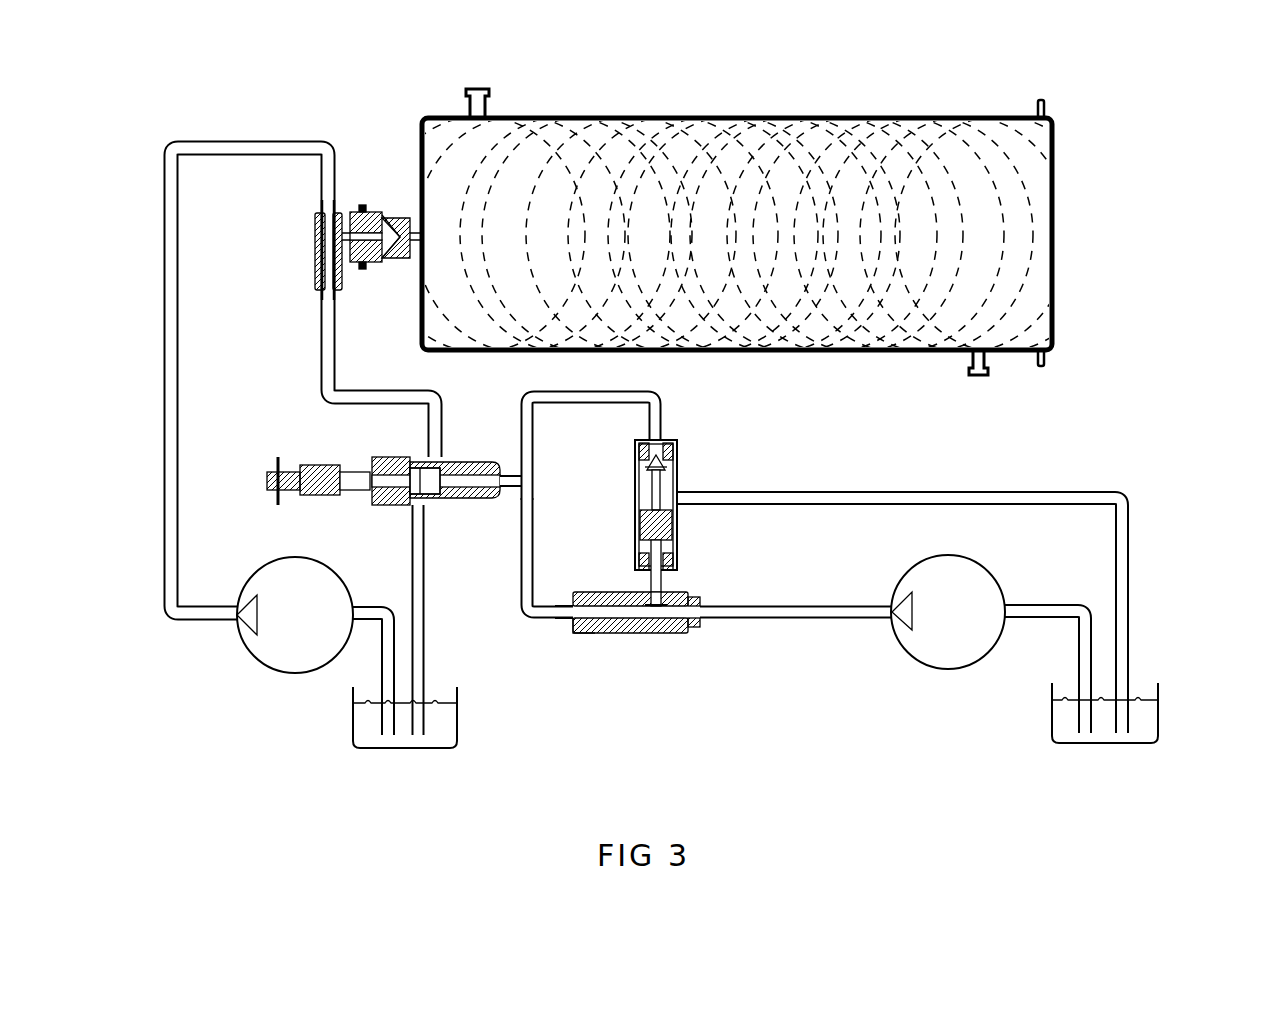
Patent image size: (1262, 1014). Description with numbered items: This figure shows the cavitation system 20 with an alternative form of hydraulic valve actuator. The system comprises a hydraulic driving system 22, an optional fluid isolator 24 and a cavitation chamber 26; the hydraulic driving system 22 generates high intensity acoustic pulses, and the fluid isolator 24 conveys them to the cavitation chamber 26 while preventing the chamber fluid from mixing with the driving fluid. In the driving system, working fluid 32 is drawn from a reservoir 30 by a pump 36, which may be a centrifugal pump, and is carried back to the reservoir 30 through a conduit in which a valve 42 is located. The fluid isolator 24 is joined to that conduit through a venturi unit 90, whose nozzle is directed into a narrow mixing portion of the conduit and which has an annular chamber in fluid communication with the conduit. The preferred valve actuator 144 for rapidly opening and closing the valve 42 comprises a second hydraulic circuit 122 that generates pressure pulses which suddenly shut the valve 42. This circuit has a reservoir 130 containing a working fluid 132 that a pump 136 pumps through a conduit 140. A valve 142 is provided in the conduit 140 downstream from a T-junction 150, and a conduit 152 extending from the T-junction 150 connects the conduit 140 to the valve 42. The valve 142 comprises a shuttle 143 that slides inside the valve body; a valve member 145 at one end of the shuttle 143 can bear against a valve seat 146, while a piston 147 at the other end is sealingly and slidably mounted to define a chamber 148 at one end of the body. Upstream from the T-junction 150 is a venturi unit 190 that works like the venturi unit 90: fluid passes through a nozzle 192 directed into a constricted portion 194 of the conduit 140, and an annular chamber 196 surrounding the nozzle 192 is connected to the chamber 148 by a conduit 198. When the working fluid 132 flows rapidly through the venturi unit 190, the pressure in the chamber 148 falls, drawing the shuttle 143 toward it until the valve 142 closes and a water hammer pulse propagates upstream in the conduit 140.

The cavitation system 20 is at (500, 85).
The hydraulic driving system 22 is at (260, 138).
The fluid isolator 24 is at (365, 195).
The cavitation chamber 26 is at (727, 105).
The reservoir 30 is at (348, 713).
The working fluid 32 is at (442, 730).
The pump 36 is at (277, 647).
The valve 42 is at (458, 515).
The venturi unit 90 is at (312, 248).
The second hydraulic circuit 122 is at (893, 465).
The reservoir 130 is at (1167, 713).
The working fluid 132 is at (1107, 725).
The pump 136 is at (993, 633).
The conduit 140 is at (527, 538).
The valve 142 is at (687, 443).
The shuttle 143 is at (660, 497).
The valve actuator 144 is at (805, 683).
The valve member 145 is at (668, 440).
The valve seat 146 is at (640, 455).
The piston 147 is at (677, 534).
The chamber 148 is at (637, 568).
The T-junction 150 is at (535, 498).
The conduit 152 is at (512, 477).
The venturi unit 190 is at (650, 642).
The nozzle 192 is at (640, 635).
The constricted portion 194 is at (583, 635).
The annular chamber 196 is at (665, 585).
The conduit 198 is at (660, 583).